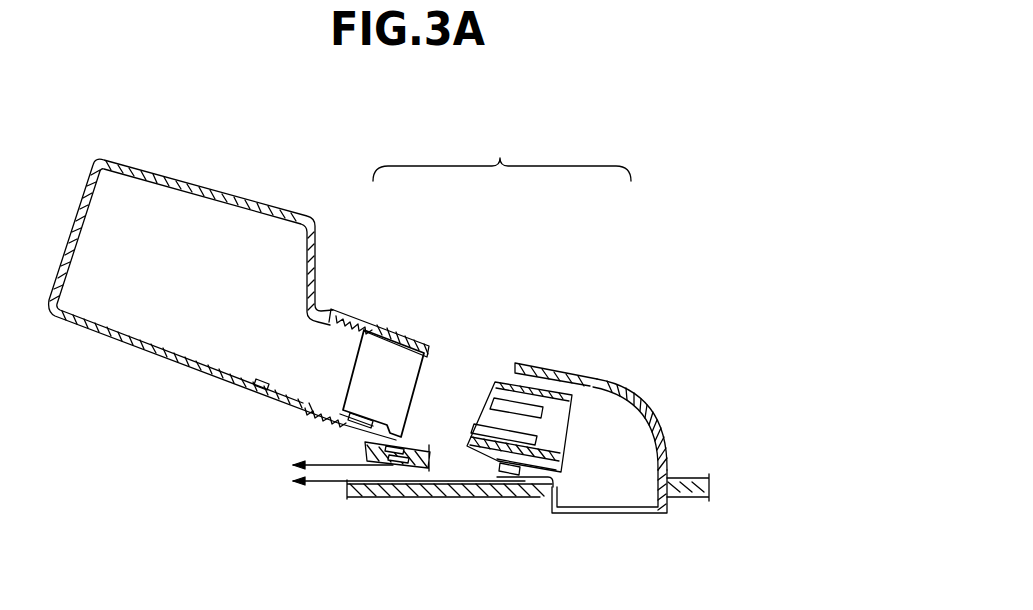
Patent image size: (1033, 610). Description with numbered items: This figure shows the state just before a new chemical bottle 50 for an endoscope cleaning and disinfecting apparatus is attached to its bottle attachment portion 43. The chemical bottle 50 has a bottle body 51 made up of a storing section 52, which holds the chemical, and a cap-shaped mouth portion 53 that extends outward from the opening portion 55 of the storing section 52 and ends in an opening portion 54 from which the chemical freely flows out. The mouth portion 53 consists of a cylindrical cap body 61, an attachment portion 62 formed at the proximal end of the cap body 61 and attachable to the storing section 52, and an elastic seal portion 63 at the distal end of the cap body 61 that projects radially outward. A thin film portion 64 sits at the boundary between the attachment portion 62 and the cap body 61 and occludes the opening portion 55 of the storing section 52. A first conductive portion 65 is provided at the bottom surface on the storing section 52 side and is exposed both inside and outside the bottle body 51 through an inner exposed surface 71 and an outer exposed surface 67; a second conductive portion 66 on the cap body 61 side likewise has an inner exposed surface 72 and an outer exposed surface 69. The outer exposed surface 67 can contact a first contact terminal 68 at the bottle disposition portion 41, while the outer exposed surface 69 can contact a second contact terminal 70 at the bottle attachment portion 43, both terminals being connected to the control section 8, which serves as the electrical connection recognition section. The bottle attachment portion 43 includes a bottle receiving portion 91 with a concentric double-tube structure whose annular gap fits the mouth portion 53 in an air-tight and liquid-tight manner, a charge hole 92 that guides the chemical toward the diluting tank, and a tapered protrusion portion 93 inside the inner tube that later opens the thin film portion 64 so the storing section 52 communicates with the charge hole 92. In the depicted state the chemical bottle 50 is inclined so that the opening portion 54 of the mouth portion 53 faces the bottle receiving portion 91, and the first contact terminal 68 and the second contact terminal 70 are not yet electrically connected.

The control section 8 is at (394, 470).
The bottle disposition portion 41 is at (376, 447).
The bottle attachment portion 43 is at (722, 370).
The chemical bottle 50 is at (326, 177).
The bottle body 51 is at (502, 156).
The storing section 52 is at (312, 246).
The mouth portion 53 is at (422, 345).
The opening portion 54 is at (403, 383).
The opening portion 55 is at (345, 380).
The cap body 61 is at (375, 413).
The attachment portion 62 is at (325, 395).
The seal portion 63 is at (425, 347).
The thin film portion 64 is at (357, 400).
The first conductive portion 65 is at (253, 375).
The second conductive portion 66 is at (540, 385).
The outer exposed surface 67 is at (258, 393).
The first contact terminal 68 is at (395, 462).
The outer exposed surface 69 is at (362, 407).
The second contact terminal 70 is at (512, 478).
The inner exposed surface 71 is at (256, 366).
The inner exposed surface 72 is at (382, 405).
The bottle receiving portion 91 is at (627, 388).
The charge hole 92 is at (670, 445).
The protrusion portion 93 is at (490, 413).